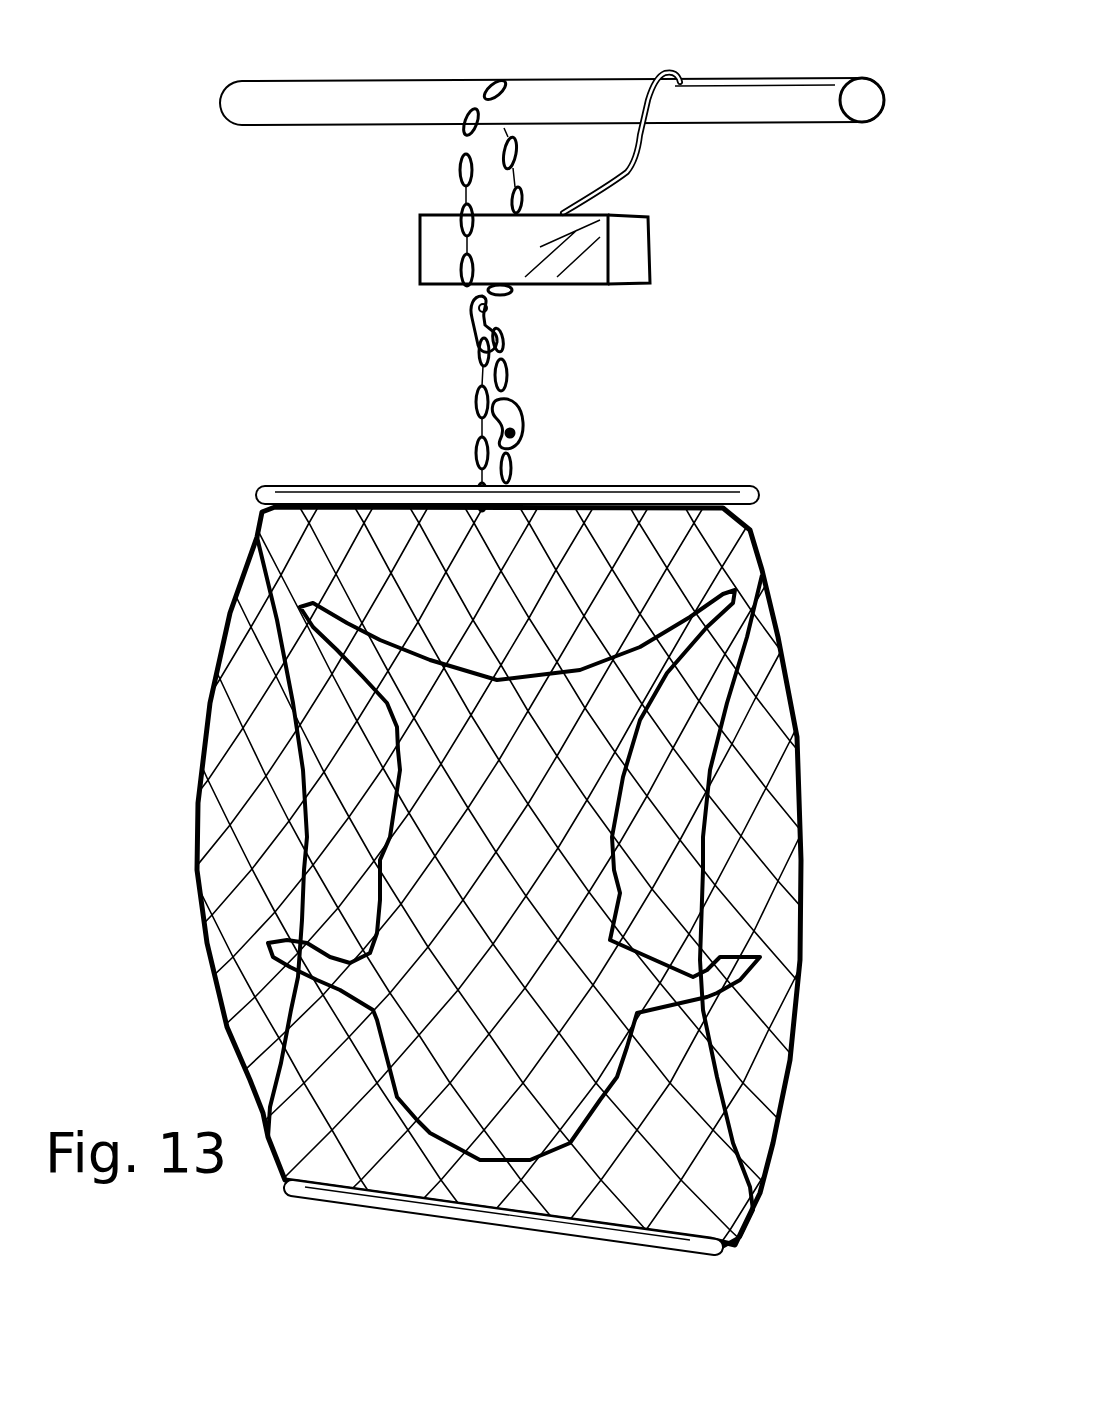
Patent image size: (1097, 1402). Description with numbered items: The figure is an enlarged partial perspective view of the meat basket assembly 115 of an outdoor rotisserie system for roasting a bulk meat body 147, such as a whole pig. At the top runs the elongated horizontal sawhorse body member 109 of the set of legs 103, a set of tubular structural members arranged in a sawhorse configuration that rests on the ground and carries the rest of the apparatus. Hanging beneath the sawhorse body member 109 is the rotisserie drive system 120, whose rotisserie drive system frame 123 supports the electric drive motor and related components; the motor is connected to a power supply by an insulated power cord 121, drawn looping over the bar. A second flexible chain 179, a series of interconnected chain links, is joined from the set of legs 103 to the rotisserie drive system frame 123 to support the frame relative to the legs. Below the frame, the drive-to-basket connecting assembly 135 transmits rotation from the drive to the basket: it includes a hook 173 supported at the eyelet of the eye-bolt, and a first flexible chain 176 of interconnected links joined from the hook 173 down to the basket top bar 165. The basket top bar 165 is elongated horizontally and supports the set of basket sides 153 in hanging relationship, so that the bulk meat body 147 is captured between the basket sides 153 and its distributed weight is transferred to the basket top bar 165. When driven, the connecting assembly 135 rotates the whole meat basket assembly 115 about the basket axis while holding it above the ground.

The set of legs 103 is at (850, 128).
The sawhorse body member 109 is at (787, 100).
The meat basket assembly 115 is at (820, 803).
The rotisserie drive system 120 is at (412, 243).
The rotisserie drive system frame 123 is at (535, 249).
The insulated power cord 121 is at (627, 182).
The drive-to-basket connecting assembly 135 is at (260, 348).
The bulk meat body 147 is at (405, 697).
The set of basket sides 153 is at (262, 896).
The basket top bar 165 is at (667, 493).
The hook 173 is at (463, 338).
The first flexible chain 176 is at (470, 406).
The second flexible chain 179 is at (450, 163).